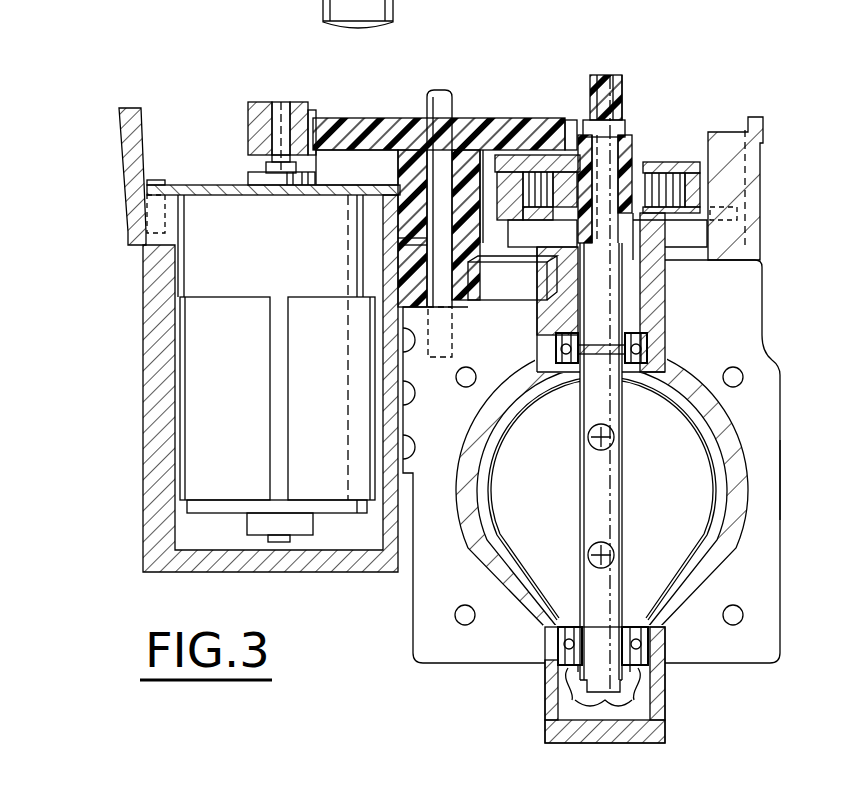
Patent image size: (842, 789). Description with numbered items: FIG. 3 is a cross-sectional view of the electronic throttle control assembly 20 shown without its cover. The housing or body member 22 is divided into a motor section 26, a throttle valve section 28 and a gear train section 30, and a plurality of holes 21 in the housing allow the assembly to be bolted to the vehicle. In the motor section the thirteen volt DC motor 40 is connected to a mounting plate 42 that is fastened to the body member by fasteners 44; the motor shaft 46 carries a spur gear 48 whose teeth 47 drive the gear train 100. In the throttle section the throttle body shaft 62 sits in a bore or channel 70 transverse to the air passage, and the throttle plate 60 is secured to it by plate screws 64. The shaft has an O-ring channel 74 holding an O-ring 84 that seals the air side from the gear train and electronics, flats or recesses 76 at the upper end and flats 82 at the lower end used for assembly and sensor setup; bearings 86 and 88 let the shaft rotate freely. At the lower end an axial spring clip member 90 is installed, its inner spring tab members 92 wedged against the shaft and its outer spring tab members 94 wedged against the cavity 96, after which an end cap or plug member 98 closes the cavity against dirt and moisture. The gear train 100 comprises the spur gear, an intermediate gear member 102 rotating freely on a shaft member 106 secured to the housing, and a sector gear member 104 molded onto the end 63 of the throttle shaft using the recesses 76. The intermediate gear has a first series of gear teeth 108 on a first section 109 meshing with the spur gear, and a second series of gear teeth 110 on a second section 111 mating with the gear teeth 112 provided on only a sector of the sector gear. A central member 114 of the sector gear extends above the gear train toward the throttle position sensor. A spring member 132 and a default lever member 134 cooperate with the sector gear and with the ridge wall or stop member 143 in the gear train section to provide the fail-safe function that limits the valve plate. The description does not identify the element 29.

The electronic throttle control assembly 20 is at (106, 491).
The holes 21 is at (468, 375).
The housing or body member 22 is at (780, 368).
The motor section 26 is at (160, 400).
The throttle valve section 28 is at (773, 473).
The ring 29 is at (495, 540).
The gear train section 30 is at (128, 178).
The motor 40 is at (197, 328).
The mounting plate 42 is at (215, 196).
The fasteners 44 is at (155, 182).
The shaft 46 is at (272, 104).
The teeth 47 is at (307, 117).
The spur gear 48 is at (247, 125).
The throttle plate 60 is at (695, 440).
The throttle body shaft 62 is at (582, 482).
The end of the throttle body shaft 63 is at (600, 167).
The plate screws 64 is at (610, 440).
The bore or channel 70 is at (580, 383).
The O-ring channel or groove 74 is at (583, 340).
The flats or recesses 76 is at (617, 133).
The flats or recesses 82 is at (586, 645).
The O-ring 84 is at (625, 322).
The bearing 86 is at (647, 357).
The bearing 88 is at (650, 635).
The axial spring clip member 90 is at (558, 670).
The inner spring tab members 92 is at (603, 705).
The outer spring tab members 94 is at (560, 687).
The cavity 96 is at (663, 710).
The end cap member or plug member 98 is at (395, 15).
The gear train 100 is at (542, 84).
The intermediate gear member 102 is at (480, 125).
The sector gear member 104 is at (693, 207).
The shaft member 106 is at (435, 97).
The first series of gear teeth 108 is at (570, 120).
The first section 109 is at (348, 118).
The second series of gear teeth 110 is at (398, 163).
The second section 111 is at (400, 217).
The gear teeth 112 is at (460, 263).
The central portion or member 114 is at (622, 80).
The spring member 132 is at (685, 185).
The default lever member 134 is at (688, 157).
The ridge wall or stop member 143 is at (717, 133).